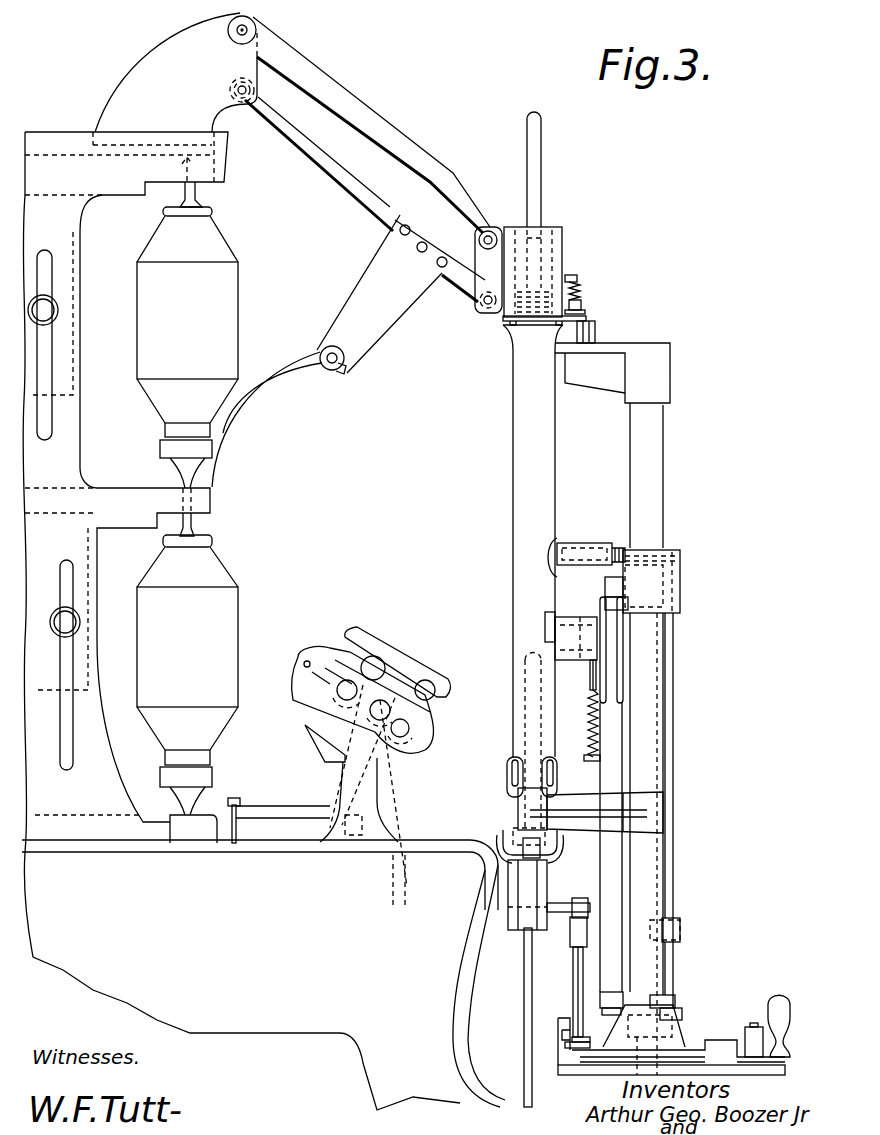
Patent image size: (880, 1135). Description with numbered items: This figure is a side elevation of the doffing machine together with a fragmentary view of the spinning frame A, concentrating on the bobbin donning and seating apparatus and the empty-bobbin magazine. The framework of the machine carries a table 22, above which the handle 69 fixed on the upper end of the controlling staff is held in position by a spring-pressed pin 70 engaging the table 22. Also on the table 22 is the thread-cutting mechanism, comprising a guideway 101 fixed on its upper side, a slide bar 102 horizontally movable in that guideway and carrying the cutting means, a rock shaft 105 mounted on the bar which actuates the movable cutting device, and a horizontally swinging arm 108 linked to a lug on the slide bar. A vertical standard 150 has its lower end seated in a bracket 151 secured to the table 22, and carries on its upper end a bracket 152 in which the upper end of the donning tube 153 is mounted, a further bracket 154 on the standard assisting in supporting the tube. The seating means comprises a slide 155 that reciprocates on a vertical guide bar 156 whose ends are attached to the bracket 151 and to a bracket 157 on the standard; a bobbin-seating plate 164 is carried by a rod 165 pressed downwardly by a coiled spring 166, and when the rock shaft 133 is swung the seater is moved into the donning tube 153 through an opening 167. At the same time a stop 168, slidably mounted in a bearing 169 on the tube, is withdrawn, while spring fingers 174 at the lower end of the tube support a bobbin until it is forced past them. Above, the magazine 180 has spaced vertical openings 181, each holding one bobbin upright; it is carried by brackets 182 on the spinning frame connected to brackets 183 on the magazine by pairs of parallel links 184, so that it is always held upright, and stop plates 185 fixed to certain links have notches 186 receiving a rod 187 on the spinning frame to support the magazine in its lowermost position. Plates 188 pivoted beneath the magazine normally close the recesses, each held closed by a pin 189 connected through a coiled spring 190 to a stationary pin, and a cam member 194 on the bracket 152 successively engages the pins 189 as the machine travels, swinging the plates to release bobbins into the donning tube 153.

The spinning frame A is at (263, 621).
The table 22 is at (785, 1071).
The handle 69 is at (780, 1020).
The spring-pressed pin 70 is at (760, 1025).
The guideway 101 is at (562, 1053).
The slide bar 102 is at (565, 1037).
The rock shaft 105 is at (583, 980).
The horizontally swinging arm 108 is at (622, 1052).
The rock shaft 133 is at (672, 707).
The vertical standard 150 is at (648, 466).
The bracket 151 is at (668, 1045).
The bracket 152 is at (607, 360).
The donning tube 153 is at (540, 488).
The bracket 154 is at (587, 822).
The slide 155 is at (596, 665).
The vertical guide bar 156 is at (612, 770).
The bracket 157 is at (652, 583).
The bobbin-seating plate 164 is at (550, 650).
The rod 165 is at (583, 758).
The coiled spring 166 is at (583, 712).
The opening 167 is at (548, 621).
The stop 168 is at (545, 553).
The bearing 169 is at (587, 524).
The spring fingers 174 is at (550, 865).
The magazine 180 is at (563, 258).
The vertical openings 181 is at (567, 227).
The brackets 182 is at (143, 72).
The brackets 183 is at (487, 277).
The parallel links 184 is at (343, 172).
The stop plates 185 is at (373, 322).
The notches 186 is at (352, 373).
The rod 187 is at (327, 367).
The plates 188 is at (545, 327).
The pin 189 is at (583, 309).
The coiled spring 190 is at (581, 291).
The cam member 194 is at (607, 321).